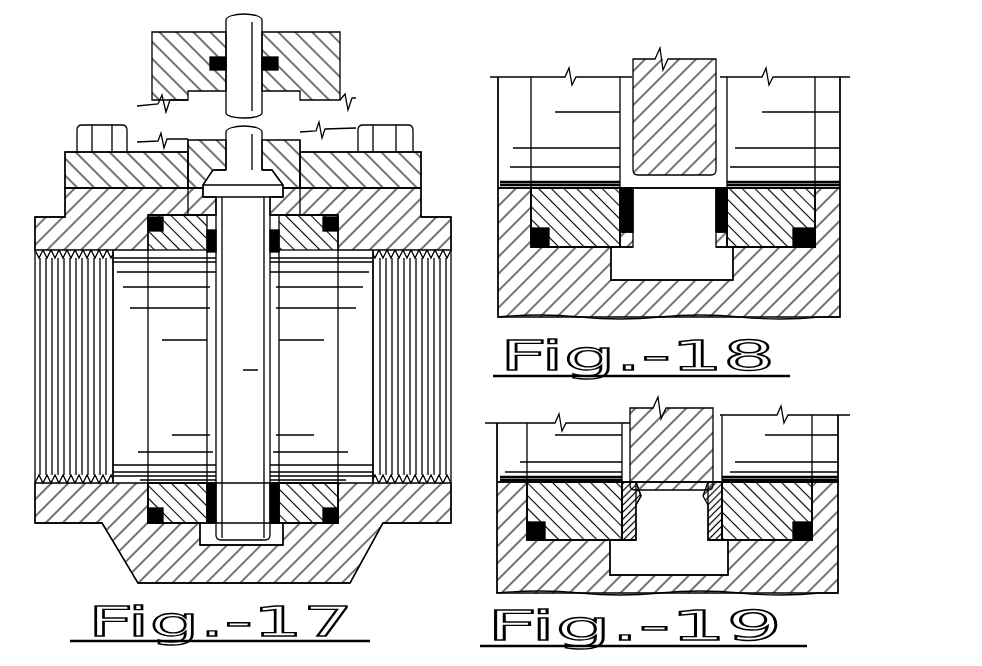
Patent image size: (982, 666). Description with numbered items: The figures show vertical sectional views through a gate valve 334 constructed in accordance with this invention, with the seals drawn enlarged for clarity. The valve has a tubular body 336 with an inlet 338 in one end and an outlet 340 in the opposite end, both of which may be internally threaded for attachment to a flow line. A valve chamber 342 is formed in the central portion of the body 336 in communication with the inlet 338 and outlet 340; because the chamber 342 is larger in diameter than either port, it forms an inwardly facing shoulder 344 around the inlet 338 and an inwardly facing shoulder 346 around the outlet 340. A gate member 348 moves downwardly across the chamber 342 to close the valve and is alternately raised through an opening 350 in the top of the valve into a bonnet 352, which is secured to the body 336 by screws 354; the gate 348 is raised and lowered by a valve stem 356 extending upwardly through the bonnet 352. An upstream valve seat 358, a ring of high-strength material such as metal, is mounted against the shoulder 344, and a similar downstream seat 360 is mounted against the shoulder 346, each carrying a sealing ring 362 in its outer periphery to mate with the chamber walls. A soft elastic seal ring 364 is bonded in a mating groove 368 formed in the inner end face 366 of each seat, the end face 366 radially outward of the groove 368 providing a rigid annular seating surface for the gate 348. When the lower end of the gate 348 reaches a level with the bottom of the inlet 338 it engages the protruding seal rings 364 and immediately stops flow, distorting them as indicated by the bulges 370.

In FIG. 17, the gate valve 334 is at (150, 100).
In FIG. 18, the gate valve 334 is at (547, 66).
In FIG. 19, the gate valve 334 is at (551, 417).
In FIG. 17, the tubular body 336 is at (65, 210).
In FIG. 18, the tubular body 336 is at (512, 288).
In FIG. 19, the tubular body 336 is at (505, 568).
In FIG. 17, the inlet 338 is at (75, 373).
In FIG. 18, the inlet 338 is at (505, 95).
In FIG. 19, the inlet 338 is at (500, 450).
In FIG. 17, the outlet 340 is at (420, 397).
In FIG. 18, the outlet 340 is at (823, 72).
In FIG. 19, the outlet 340 is at (825, 447).
In FIG. 17, the valve chamber 342 is at (210, 546).
In FIG. 18, the valve chamber 342 is at (686, 276).
In FIG. 19, the valve chamber 342 is at (687, 577).
In FIG. 17, the inwardly facing shoulder 344 is at (148, 492).
In FIG. 18, the inwardly facing shoulder 344 is at (525, 191).
In FIG. 17, the inwardly facing shoulder 346 is at (338, 500).
In FIG. 18, the inwardly facing shoulder 346 is at (820, 207).
In FIG. 17, the gate member 348 is at (256, 302).
In FIG. 18, the gate member 348 is at (684, 103).
In FIG. 19, the gate member 348 is at (684, 442).
In FIG. 17, the opening 350 is at (190, 200).
In FIG. 17, the bonnet 352 is at (152, 57).
In FIG. 17, the screws 354 is at (95, 129).
In FIG. 17, the valve stem 356 is at (266, 32).
In FIG. 17, the upstream valve seat 358 is at (158, 483).
In FIG. 18, the upstream valve seat 358 is at (580, 181).
In FIG. 19, the upstream valve seat 358 is at (580, 480).
In FIG. 17, the downstream seat 360 is at (313, 482).
In FIG. 18, the downstream seat 360 is at (800, 182).
In FIG. 19, the downstream seat 360 is at (794, 480).
In FIG. 17, the sealing ring 362 is at (153, 524).
In FIG. 18, the sealing ring 362 is at (531, 250).
In FIG. 19, the sealing ring 362 is at (527, 531).
In FIG. 17, the seal ring 364 is at (207, 450).
In FIG. 18, the seal ring 364 is at (716, 200).
In FIG. 19, the seal ring 364 is at (707, 527).
In FIG. 17, the inner end face 366 is at (282, 536).
In FIG. 18, the inner end face 366 is at (716, 247).
In FIG. 19, the inner end face 366 is at (712, 540).
In FIG. 18, the groove 368 is at (620, 198).
In FIG. 19, the groove 368 is at (622, 505).
In FIG. 19, the bulges 370 is at (641, 496).